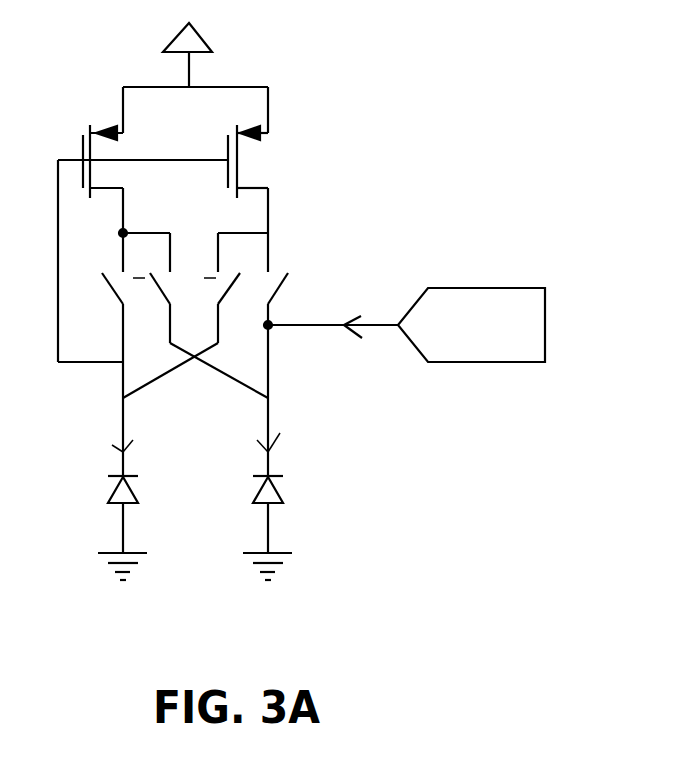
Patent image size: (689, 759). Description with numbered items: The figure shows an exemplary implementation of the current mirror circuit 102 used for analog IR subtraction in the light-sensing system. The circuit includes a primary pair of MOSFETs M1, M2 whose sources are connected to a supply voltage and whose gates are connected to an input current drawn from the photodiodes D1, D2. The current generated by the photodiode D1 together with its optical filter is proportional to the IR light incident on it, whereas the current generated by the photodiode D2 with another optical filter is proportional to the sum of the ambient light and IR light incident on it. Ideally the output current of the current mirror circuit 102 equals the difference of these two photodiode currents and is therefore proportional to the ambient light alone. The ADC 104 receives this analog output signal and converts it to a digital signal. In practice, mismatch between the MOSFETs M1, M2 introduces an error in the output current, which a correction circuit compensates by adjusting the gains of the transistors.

The current mirror circuit 102 is at (248, 301).
The ADC 104 is at (543, 302).
The MOSFET M1 is at (128, 142).
The MOSFET M2 is at (273, 142).
The photodiode D1 is at (148, 488).
The photodiode D2 is at (296, 488).